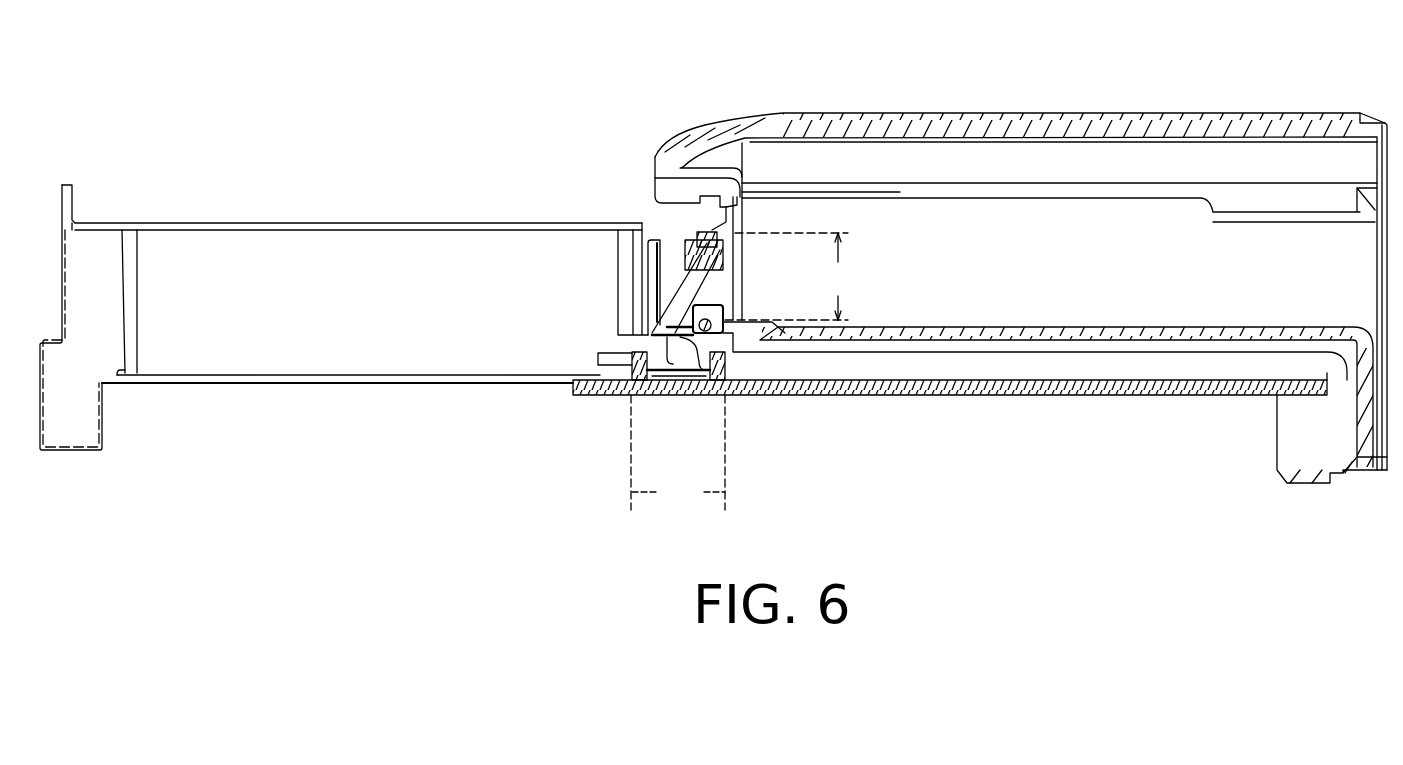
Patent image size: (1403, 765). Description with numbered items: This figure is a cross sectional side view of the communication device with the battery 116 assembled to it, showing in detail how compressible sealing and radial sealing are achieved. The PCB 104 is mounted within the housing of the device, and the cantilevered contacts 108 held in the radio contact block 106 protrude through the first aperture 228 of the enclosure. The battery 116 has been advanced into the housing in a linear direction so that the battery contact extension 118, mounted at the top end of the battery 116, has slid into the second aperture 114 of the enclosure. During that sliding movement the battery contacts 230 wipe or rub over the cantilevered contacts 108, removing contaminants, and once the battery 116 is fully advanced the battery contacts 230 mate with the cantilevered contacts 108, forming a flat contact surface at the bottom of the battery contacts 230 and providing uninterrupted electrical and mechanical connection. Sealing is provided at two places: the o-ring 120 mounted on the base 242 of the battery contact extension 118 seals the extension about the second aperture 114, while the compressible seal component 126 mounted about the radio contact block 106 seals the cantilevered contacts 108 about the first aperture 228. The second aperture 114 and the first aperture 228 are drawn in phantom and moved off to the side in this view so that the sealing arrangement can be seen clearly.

The PCB 104 is at (1048, 397).
The radio contact block 106 is at (698, 362).
The cantilevered contacts 108 is at (648, 323).
The second aperture 114 is at (791, 276).
The battery 116 is at (1013, 122).
The battery contact extension 118 is at (660, 243).
The o-ring 120 is at (703, 233).
The compressible seal component 126 is at (632, 357).
The first aperture 228 is at (678, 452).
The battery contacts 230 is at (646, 289).
The base 242 is at (710, 287).